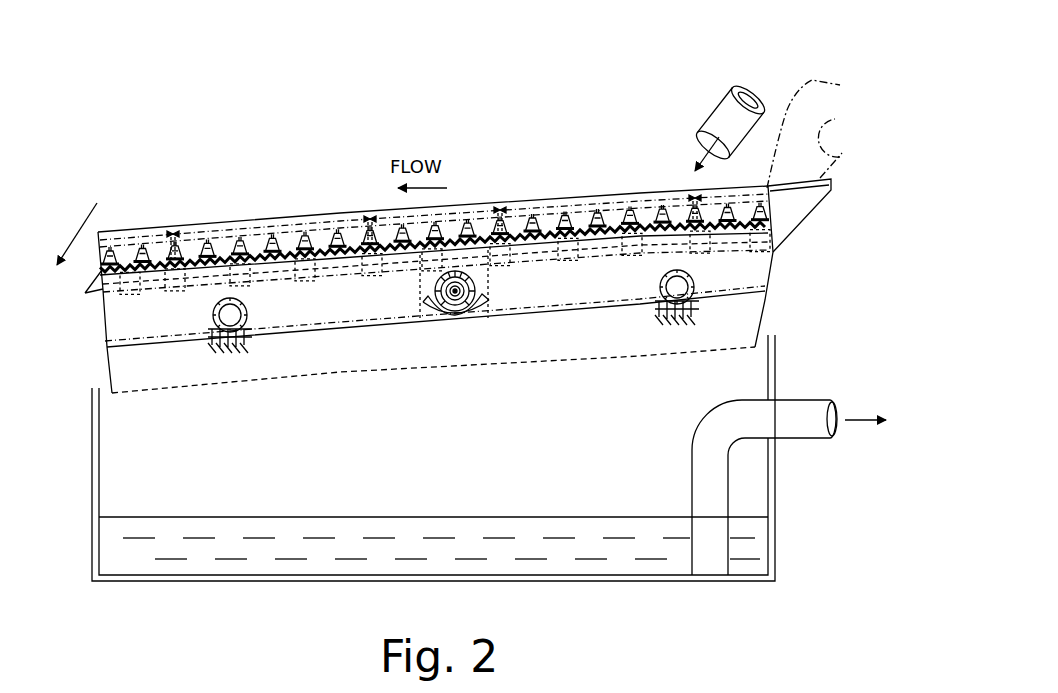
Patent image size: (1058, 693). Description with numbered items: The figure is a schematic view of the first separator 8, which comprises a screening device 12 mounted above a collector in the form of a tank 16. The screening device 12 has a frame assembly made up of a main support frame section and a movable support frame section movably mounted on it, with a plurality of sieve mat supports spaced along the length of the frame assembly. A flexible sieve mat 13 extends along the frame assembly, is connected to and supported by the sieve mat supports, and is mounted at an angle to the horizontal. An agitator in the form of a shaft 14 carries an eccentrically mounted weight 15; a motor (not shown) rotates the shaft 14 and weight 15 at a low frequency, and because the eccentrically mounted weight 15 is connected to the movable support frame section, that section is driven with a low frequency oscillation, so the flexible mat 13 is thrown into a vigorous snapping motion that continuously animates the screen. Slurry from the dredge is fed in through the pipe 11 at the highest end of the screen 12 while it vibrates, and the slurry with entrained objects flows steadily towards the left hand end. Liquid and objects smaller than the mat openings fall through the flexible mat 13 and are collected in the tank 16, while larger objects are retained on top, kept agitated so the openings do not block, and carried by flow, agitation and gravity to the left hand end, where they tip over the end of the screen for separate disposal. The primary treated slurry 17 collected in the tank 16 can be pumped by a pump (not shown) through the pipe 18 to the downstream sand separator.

The first separator 8 is at (545, 190).
The pipe 11 is at (726, 98).
The screening device 12 is at (103, 323).
The flexible sieve mat 13 is at (192, 262).
The shaft 14 is at (452, 298).
The eccentrically mounted weight 15 is at (477, 315).
The tank 16 is at (620, 578).
The primary treated slurry 17 is at (288, 543).
The pipe 18 is at (802, 438).